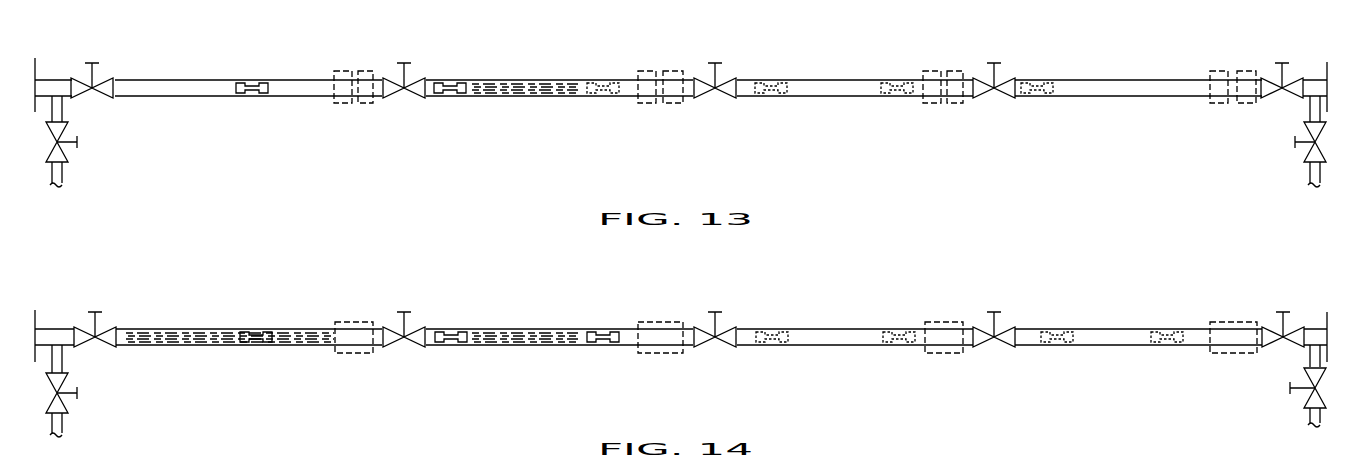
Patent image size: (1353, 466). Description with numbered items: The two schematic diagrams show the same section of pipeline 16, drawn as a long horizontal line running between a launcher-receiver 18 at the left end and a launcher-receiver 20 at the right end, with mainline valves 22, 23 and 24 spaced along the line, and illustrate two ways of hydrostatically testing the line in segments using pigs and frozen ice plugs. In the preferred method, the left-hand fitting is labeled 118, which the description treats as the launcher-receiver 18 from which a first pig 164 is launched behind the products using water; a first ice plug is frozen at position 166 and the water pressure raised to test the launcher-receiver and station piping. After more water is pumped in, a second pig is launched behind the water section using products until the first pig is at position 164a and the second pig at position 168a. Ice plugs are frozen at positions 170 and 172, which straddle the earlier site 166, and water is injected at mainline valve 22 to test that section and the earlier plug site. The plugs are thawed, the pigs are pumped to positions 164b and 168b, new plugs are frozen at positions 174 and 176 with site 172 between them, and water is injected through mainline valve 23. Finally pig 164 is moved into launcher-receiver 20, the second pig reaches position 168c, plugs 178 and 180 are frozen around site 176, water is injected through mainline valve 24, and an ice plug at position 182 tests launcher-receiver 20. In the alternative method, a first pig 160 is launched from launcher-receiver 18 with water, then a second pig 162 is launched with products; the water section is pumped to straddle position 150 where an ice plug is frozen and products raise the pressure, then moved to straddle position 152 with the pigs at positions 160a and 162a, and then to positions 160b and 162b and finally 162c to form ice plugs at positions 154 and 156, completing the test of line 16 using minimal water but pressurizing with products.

In FIG. 13, the section of pipeline 16 is at (530, 97).
In FIG. 14, the section of pipeline 16 is at (542, 346).
In FIG. 14, the launcher-receiver 18 is at (50, 328).
In FIG. 13, the launcher-receiver 20 is at (1310, 78).
In FIG. 14, the launcher-receiver 20 is at (1305, 328).
In FIG. 13, the mainline valve 22 is at (420, 94).
In FIG. 14, the mainline valve 22 is at (395, 347).
In FIG. 13, the mainline valve 23 is at (724, 80).
In FIG. 14, the mainline valve 23 is at (700, 347).
In FIG. 13, the mainline valve 24 is at (1008, 80).
In FIG. 14, the mainline valve 24 is at (990, 347).
In FIG. 13, the inlet fitting 118 is at (58, 77).
In FIG. 14, the straddle position 150 is at (383, 302).
In FIG. 14, the straddle position 152 is at (658, 321).
In FIG. 14, the ice plug position 154 is at (945, 321).
In FIG. 14, the ice plug position 156 is at (1232, 321).
In FIG. 14, the first pig 160 is at (452, 331).
In FIG. 14, the position of first pig 160a is at (772, 331).
In FIG. 14, the position of first pig 160b is at (1055, 331).
In FIG. 14, the second pig 162 is at (258, 331).
In FIG. 14, the position of second pig 162a is at (618, 331).
In FIG. 14, the position of second pig 162b is at (920, 302).
In FIG. 14, the position of second pig 162c is at (1160, 331).
In FIG. 13, the first pig 164 is at (462, 82).
In FIG. 13, the position of first pig 164a is at (772, 94).
In FIG. 13, the position of first pig 164b is at (1036, 94).
In FIG. 13, the ice plug position 166 is at (383, 52).
In FIG. 13, the position of second pig 168a is at (254, 82).
In FIG. 13, the position of second pig 168b is at (604, 94).
In FIG. 13, the position of second pig 168c is at (888, 94).
In FIG. 13, the ice plug position 170 is at (345, 104).
In FIG. 13, the ice plug position 172 is at (675, 104).
In FIG. 13, the ice plug position 174 is at (645, 70).
In FIG. 13, the ice plug position 176 is at (953, 104).
In FIG. 13, the ice plug position 178 is at (952, 52).
In FIG. 13, the ice plug position 180 is at (1247, 70).
In FIG. 13, the ice plug position 182 is at (1222, 104).